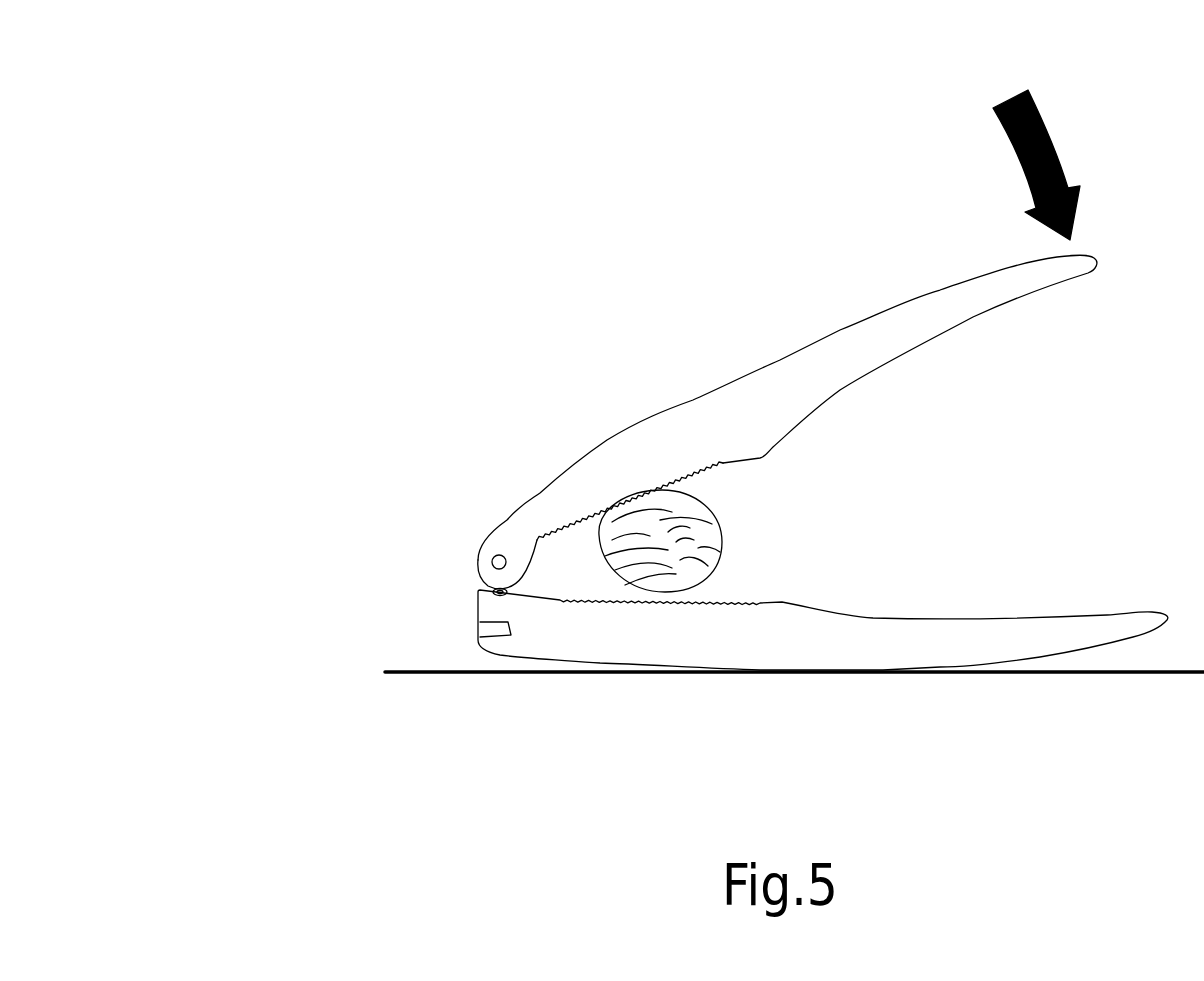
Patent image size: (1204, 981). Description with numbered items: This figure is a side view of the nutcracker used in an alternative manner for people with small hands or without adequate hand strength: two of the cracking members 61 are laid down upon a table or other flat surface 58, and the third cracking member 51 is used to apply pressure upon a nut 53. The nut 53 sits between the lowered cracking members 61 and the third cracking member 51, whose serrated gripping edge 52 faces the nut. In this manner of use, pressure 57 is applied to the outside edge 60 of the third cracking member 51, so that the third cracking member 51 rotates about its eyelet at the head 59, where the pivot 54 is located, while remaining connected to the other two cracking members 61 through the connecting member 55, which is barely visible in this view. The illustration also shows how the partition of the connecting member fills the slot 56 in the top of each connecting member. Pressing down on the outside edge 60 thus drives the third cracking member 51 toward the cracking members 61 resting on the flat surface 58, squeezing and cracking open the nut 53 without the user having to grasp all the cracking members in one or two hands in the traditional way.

The third cracking member 51 is at (808, 375).
The serrated gripping edge of upper jaw 52 is at (717, 460).
The nut 53 is at (708, 530).
The pivot pin 54 is at (493, 558).
The connecting member 55 is at (490, 587).
The slot 56 is at (480, 625).
The pressure 57 is at (1045, 115).
The flat surface 58 is at (390, 672).
The head of upper jaw 59 is at (542, 535).
The outside edge 60 is at (931, 303).
The cracking members 61 is at (775, 653).